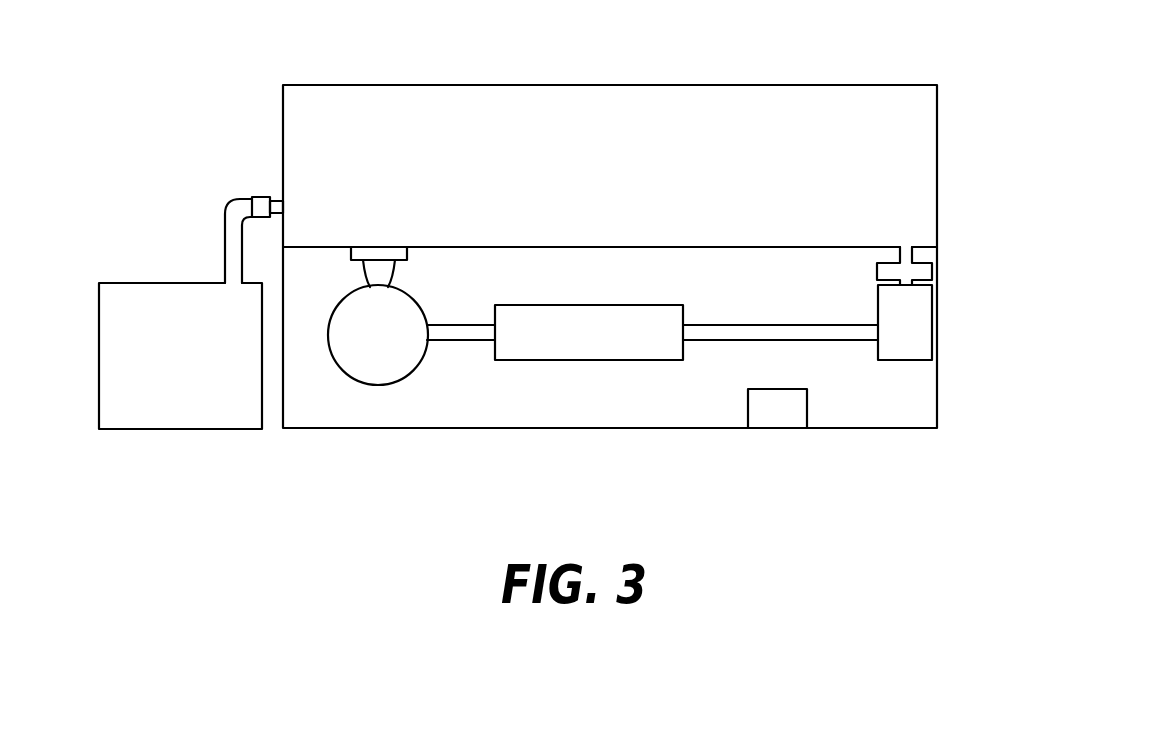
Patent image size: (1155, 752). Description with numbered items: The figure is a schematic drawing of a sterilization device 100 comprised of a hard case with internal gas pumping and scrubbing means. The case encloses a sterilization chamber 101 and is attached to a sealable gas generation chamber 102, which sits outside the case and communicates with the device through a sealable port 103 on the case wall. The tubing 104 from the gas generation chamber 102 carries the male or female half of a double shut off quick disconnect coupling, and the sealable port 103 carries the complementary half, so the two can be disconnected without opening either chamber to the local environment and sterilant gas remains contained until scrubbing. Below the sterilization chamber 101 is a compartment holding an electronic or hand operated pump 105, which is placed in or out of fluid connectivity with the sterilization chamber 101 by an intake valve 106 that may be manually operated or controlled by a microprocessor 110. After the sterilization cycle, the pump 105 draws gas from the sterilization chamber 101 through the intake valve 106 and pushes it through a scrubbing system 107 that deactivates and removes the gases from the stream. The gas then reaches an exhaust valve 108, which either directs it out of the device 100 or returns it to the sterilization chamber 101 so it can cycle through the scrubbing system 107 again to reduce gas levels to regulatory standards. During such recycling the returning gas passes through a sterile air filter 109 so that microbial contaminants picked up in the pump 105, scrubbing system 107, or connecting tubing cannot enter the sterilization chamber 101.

The sterilization device 100 is at (1006, 72).
The sterilization chamber 101 is at (637, 194).
The gas generation chamber 102 is at (208, 346).
The sealable port 103 is at (260, 197).
The tubing 104 is at (225, 237).
The pump 105 is at (400, 346).
The intake valve 106 is at (381, 254).
The scrubbing system 107 is at (613, 346).
The exhaust valve 108 is at (915, 330).
The sterile air filter 109 is at (932, 270).
The microprocessor 110 is at (801, 421).